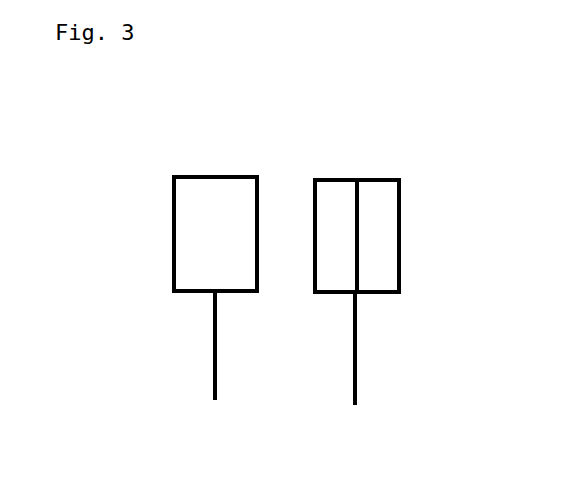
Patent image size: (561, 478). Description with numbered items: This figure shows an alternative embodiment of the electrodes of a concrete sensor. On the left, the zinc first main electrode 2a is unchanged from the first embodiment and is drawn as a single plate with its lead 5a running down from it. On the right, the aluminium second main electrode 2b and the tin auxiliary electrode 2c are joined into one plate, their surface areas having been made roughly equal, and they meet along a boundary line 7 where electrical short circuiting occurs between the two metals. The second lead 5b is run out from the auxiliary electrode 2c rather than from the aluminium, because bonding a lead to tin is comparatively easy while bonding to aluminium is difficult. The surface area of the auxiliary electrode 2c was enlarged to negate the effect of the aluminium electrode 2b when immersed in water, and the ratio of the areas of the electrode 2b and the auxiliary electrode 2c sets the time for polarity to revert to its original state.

The first main electrode 2a is at (179, 222).
The second main electrode 2b is at (393, 210).
The auxiliary electrode 2c is at (328, 183).
The boundary line 7 is at (357, 255).
The lead 5a is at (213, 350).
The lead 5b is at (355, 350).